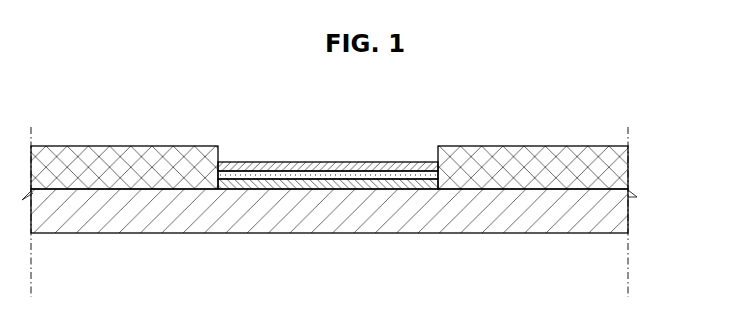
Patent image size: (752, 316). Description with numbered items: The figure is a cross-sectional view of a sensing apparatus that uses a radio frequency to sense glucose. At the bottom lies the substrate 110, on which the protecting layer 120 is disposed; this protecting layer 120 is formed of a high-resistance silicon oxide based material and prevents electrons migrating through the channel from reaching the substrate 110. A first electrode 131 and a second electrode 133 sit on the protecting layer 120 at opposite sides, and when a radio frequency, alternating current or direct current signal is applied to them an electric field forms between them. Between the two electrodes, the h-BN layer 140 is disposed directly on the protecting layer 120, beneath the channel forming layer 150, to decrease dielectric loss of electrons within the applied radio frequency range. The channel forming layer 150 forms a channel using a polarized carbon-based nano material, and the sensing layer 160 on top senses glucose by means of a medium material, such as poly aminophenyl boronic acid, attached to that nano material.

The substrate 110 is at (610, 271).
The protecting layer 120 is at (610, 221).
The first electrode 131 is at (125, 158).
The second electrode 133 is at (537, 153).
The hexagonal-boron nitride (h-BN) layer 140 is at (333, 185).
The channel forming layer 150 is at (377, 175).
The sensing layer 160 is at (274, 167).